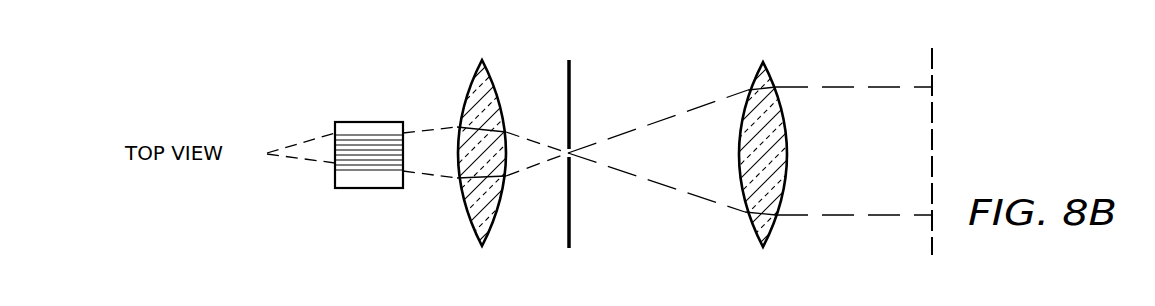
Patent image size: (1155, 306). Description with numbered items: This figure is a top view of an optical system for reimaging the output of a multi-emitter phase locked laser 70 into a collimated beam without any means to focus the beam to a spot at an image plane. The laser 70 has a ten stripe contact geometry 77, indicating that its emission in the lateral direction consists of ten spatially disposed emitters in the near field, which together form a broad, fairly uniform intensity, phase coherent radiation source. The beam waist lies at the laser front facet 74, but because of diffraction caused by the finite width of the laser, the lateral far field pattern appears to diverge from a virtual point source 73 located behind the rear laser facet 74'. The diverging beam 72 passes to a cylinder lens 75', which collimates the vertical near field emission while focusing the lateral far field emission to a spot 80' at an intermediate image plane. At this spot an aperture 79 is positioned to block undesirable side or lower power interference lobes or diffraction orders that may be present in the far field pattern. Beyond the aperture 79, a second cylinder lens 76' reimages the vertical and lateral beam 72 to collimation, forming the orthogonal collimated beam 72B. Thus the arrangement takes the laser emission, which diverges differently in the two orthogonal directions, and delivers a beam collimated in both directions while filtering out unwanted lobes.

The multi-emitter phase locked laser 70 is at (341, 108).
The ten stripe contact geometry 77 is at (376, 119).
The laser front facet 74 is at (388, 104).
The rear laser facet 74' is at (355, 205).
The virtual point source 73 is at (267, 156).
The beam 72 is at (433, 176).
The cylinder lens 75' is at (483, 142).
The spot 80' is at (537, 184).
The aperture 79 is at (572, 152).
The cylinder lens 76' is at (764, 141).
The orthogonal collimated beam 72B is at (881, 86).